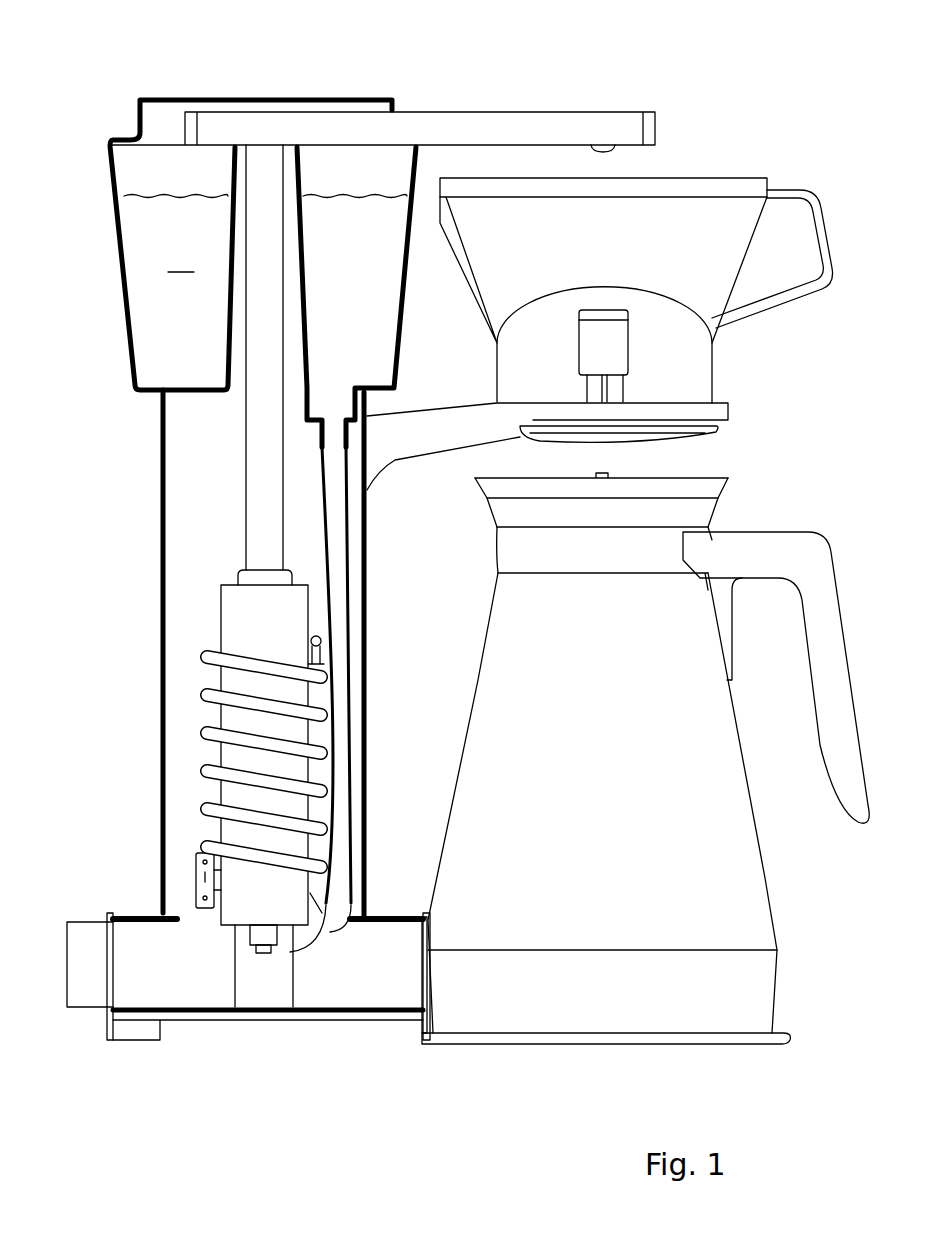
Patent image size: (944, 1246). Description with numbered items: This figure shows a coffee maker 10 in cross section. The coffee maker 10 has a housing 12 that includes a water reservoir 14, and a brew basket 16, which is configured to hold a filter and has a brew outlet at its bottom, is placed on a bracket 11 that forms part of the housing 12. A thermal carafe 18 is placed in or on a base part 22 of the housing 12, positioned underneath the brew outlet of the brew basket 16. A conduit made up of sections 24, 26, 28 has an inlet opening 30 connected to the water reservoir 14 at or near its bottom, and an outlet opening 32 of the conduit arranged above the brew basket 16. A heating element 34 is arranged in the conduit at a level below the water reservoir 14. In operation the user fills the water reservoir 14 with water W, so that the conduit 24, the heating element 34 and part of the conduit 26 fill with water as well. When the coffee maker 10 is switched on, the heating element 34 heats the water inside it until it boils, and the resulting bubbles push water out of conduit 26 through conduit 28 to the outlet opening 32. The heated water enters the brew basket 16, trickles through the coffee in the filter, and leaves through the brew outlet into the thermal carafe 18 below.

The coffee maker 10 is at (454, 68).
The bracket 11 is at (400, 440).
The housing 12 is at (160, 602).
The water reservoir 14 is at (127, 345).
The brew basket 16 is at (722, 208).
The thermal carafe 18 is at (728, 877).
The base part 22 is at (388, 918).
The conduit 24 is at (354, 585).
The conduit 26 is at (253, 520).
The conduit 28 is at (498, 137).
The inlet opening 30 is at (322, 432).
The outlet opening 32 is at (602, 152).
The heating element 34 is at (190, 722).